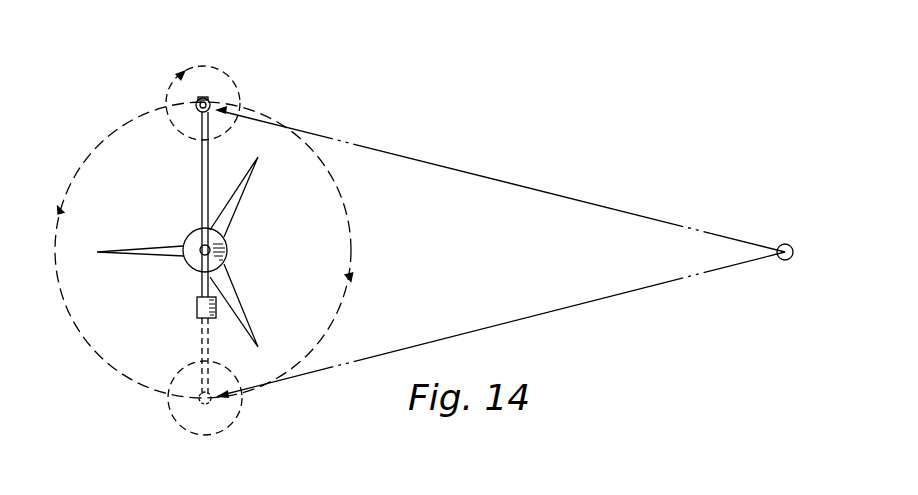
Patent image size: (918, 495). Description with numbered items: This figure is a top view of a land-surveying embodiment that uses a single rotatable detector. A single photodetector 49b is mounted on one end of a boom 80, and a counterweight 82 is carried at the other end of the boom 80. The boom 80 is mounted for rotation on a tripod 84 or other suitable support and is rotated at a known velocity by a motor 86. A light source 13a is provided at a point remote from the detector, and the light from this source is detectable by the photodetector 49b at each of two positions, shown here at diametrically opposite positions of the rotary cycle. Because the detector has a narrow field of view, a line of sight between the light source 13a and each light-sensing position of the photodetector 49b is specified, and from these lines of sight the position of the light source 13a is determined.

The light source 13a is at (792, 249).
The photodetector 49b is at (210, 102).
The boom 80 is at (202, 175).
The counterweight 82 is at (197, 300).
The tripod 84 is at (247, 199).
The motor 86 is at (228, 250).